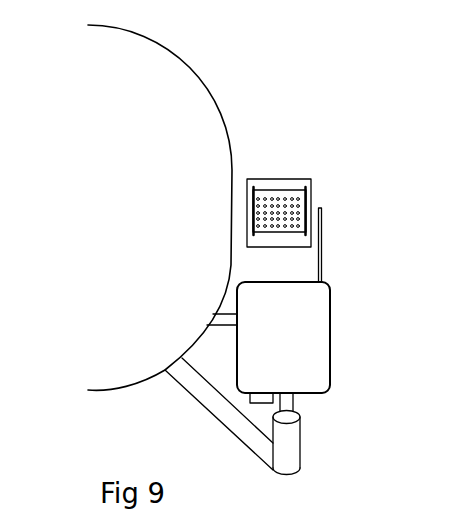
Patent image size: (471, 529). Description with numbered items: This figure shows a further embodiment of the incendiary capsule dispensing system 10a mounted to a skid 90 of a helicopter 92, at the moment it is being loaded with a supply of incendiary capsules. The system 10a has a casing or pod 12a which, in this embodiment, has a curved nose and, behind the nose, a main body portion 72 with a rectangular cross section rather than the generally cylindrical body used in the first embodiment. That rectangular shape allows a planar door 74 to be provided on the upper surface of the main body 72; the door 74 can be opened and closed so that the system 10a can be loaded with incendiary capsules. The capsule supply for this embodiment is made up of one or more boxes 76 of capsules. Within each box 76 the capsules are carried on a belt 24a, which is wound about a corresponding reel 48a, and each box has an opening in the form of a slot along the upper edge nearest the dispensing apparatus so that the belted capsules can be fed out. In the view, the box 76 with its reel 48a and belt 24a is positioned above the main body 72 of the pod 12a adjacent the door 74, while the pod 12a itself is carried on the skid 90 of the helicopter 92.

The helicopter 92 is at (186, 52).
The belt 24a is at (277, 203).
The box 76 is at (312, 182).
The reel 48a is at (307, 200).
The planar door 74 is at (322, 255).
The main body portion 72 is at (331, 316).
The casing or pod 12a is at (334, 359).
The system 10a is at (341, 388).
The skid 90 is at (212, 413).